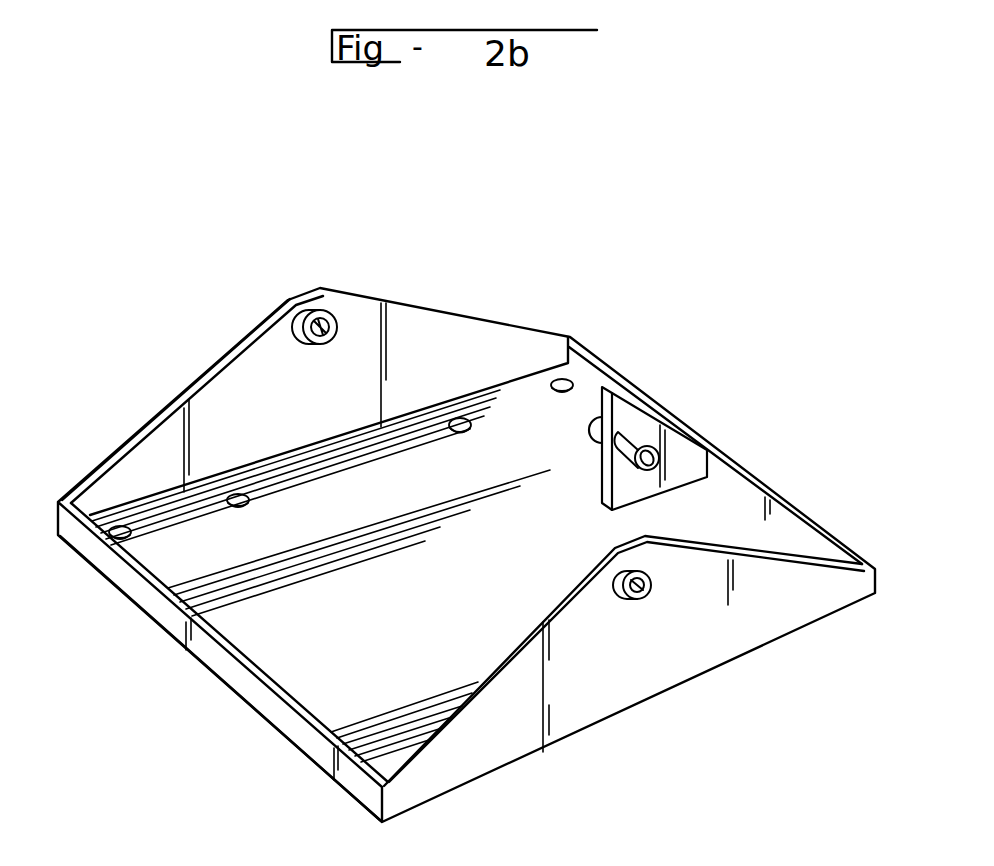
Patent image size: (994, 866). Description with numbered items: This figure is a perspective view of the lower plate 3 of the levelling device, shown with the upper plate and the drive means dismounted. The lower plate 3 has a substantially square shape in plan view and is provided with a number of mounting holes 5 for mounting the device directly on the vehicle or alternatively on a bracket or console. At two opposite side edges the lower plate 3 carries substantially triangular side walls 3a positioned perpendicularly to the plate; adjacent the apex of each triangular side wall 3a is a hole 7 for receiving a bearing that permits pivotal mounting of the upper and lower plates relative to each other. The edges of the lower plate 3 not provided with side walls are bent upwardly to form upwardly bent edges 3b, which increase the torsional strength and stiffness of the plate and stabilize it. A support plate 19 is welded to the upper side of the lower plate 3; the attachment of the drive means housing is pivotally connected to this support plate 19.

The lower plate 3 is at (700, 512).
The side wall 3a is at (227, 395).
The upwardly bent edge 3b is at (273, 710).
The mounting hole 5 is at (132, 547).
The hole 7 is at (335, 317).
The support plate 19 is at (678, 443).